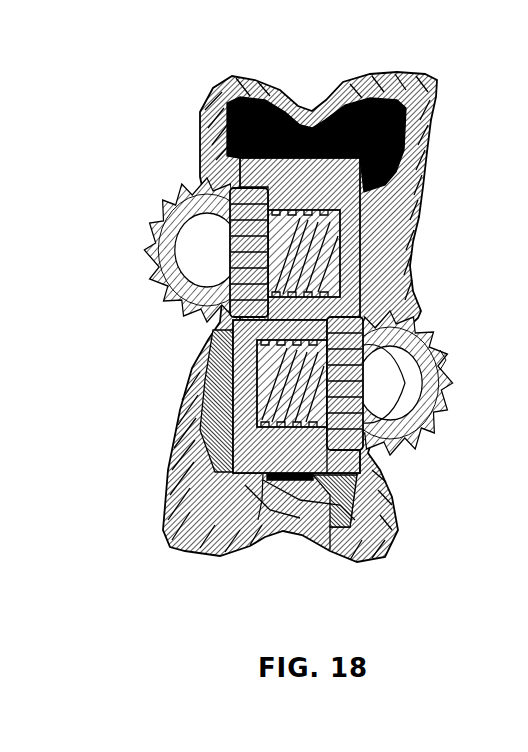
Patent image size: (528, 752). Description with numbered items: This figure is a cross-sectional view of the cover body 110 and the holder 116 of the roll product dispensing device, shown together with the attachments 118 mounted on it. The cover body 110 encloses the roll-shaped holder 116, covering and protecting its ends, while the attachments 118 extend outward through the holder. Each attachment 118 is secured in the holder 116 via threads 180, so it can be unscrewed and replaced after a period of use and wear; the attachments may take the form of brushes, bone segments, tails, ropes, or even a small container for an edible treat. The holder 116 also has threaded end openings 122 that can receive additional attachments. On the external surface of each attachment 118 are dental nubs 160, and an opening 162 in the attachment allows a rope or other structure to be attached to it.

The cover body 110 is at (407, 68).
The holder 116 is at (232, 329).
The attachment 118 is at (168, 200).
The threaded end opening 122 is at (260, 473).
The dental nub 160 is at (452, 388).
The opening 162 is at (383, 367).
The threads 180 is at (258, 431).